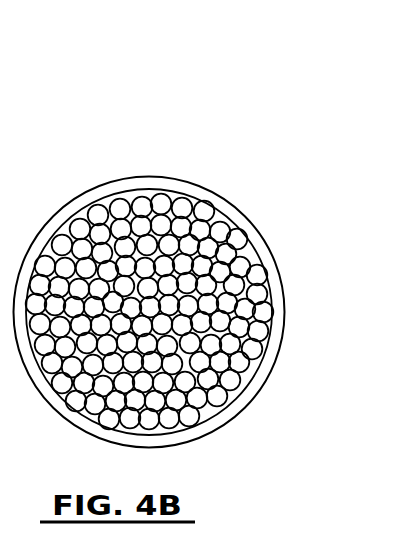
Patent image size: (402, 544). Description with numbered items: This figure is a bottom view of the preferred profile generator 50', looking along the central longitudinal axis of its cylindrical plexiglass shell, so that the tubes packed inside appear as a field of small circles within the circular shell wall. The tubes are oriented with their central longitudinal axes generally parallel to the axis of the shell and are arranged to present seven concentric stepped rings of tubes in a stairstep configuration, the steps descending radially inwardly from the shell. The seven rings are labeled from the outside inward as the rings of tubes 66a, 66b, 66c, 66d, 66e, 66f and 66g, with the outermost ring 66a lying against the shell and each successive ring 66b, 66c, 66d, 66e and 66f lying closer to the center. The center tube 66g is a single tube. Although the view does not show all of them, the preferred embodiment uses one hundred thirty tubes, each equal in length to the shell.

The profile generator 50' is at (188, 249).
The ring of tubes 66a is at (234, 376).
The ring of tubes 66b is at (224, 359).
The ring of tubes 66c is at (214, 342).
The ring of tubes 66d is at (206, 317).
The ring of tubes 66e is at (191, 304).
The ring of tubes 66f is at (172, 300).
The center tube 66g is at (153, 305).